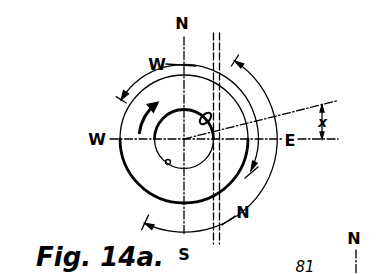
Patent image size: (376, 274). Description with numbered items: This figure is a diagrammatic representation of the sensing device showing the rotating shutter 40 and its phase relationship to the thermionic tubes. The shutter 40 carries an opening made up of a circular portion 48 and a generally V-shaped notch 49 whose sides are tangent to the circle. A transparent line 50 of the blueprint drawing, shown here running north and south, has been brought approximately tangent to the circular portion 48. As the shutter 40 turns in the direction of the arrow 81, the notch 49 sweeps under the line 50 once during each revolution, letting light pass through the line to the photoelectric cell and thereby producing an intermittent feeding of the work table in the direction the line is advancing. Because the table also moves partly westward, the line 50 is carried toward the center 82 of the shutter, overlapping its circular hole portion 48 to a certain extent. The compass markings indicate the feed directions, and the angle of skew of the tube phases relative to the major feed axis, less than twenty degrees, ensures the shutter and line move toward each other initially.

The shutter 40 is at (137, 180).
The circular portion 48 is at (168, 165).
The V-shaped notch 49 is at (204, 114).
The transparent line 50 is at (217, 38).
The arrow 81 is at (119, 104).
The center of the shutter 82 is at (184, 139).